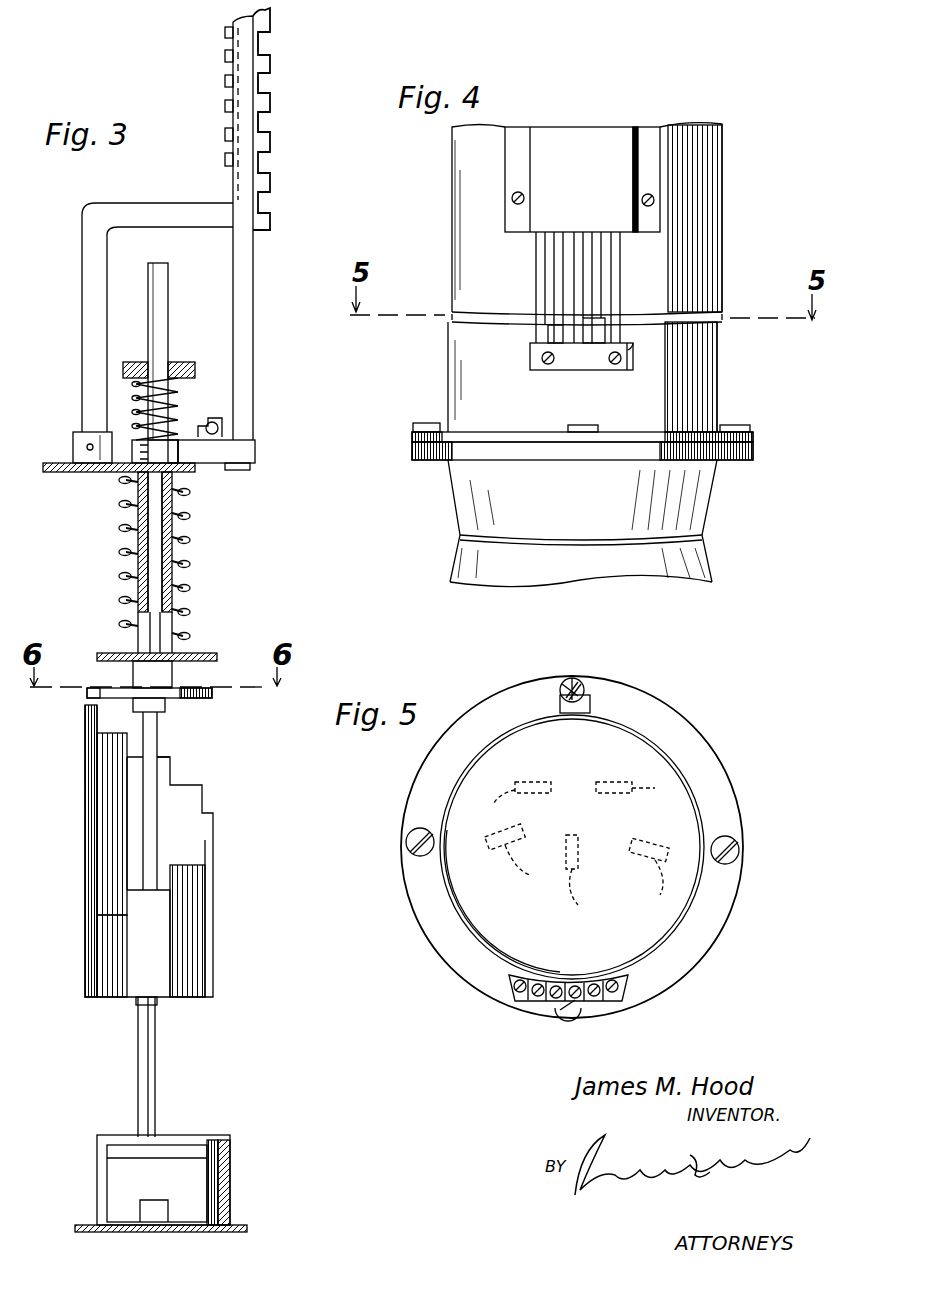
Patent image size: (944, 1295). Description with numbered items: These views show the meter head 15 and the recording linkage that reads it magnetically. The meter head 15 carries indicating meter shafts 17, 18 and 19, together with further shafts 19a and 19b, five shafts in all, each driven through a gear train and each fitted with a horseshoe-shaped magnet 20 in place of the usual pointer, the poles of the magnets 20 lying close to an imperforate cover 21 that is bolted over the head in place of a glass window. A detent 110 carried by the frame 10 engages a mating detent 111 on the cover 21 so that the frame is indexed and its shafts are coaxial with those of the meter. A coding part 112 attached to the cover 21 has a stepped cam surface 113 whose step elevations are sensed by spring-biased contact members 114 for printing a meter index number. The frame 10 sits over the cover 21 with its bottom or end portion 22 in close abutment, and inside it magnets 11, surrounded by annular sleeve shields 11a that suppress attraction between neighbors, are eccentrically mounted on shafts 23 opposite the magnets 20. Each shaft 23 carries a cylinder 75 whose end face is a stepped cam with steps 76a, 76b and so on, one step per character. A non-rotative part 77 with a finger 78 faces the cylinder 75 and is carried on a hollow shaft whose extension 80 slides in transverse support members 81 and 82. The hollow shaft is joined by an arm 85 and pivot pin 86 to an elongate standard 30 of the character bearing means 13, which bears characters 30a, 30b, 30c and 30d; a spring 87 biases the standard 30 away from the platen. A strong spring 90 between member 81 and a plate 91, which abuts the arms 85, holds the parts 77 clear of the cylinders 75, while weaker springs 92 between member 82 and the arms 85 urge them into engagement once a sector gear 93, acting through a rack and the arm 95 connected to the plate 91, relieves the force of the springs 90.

In FIG. 4, the frame 10 is at (722, 154).
In FIG. 5, the frame 10 is at (700, 802).
In FIG. 3, the magnets 11 is at (190, 1175).
In FIG. 3, the annular sleeve shield 11a is at (228, 1152).
In FIG. 3, the character bearing means 13 is at (258, 49).
In FIG. 4, the meter head 15 is at (744, 484).
In FIG. 5, the meter head 15 is at (412, 946).
In FIG. 5, the indicating meter shaft 17 is at (510, 848).
In FIG. 5, the indicating meter shaft 18 is at (578, 850).
In FIG. 5, the indicating meter shaft 19 is at (650, 845).
In FIG. 5, the indicating meter shaft 19a is at (548, 776).
In FIG. 5, the indicating meter shaft 19b is at (612, 782).
In FIG. 5, the magnets 20 is at (576, 849).
In FIG. 4, the cover 21 is at (720, 372).
In FIG. 3, the bottom or end portion 22 is at (232, 1228).
In FIG. 3, the shaft 23 is at (150, 1045).
In FIG. 3, the elongate standard 30 is at (243, 228).
In FIG. 3, the character 30a is at (222, 136).
In FIG. 3, the character 30b is at (222, 108).
In FIG. 3, the character 30c is at (222, 82).
In FIG. 3, the character 30d is at (222, 56).
In FIG. 3, the cylinder 75 is at (195, 905).
In FIG. 3, the step 76a is at (115, 733).
In FIG. 3, the step 76b is at (165, 757).
In FIG. 3, the part 77 is at (200, 700).
In FIG. 3, the finger or arm portion 78 is at (80, 693).
In FIG. 3, the extension 80 is at (160, 284).
In FIG. 3, the transverse support member 81 is at (208, 653).
In FIG. 3, the transverse support member 82 is at (178, 362).
In FIG. 3, the arm 85 is at (215, 463).
In FIG. 3, the pin 86 is at (238, 448).
In FIG. 3, the spring 87 is at (210, 420).
In FIG. 3, the spring 90 is at (120, 528).
In FIG. 3, the plate 91 is at (60, 468).
In FIG. 3, the spring 92 is at (132, 396).
In FIG. 3, the sector gear 93 is at (265, 183).
In FIG. 3, the arm 95 is at (82, 264).
In FIG. 5, the detent 110 is at (592, 700).
In FIG. 5, the mating detent 111 is at (575, 694).
In FIG. 4, the coding part 112 is at (586, 365).
In FIG. 5, the coding part 112 is at (610, 998).
In FIG. 4, the stepped cam surface 113 is at (636, 358).
In FIG. 4, the contact members 114 is at (557, 275).
In FIG. 5, the contact members 114 is at (520, 995).